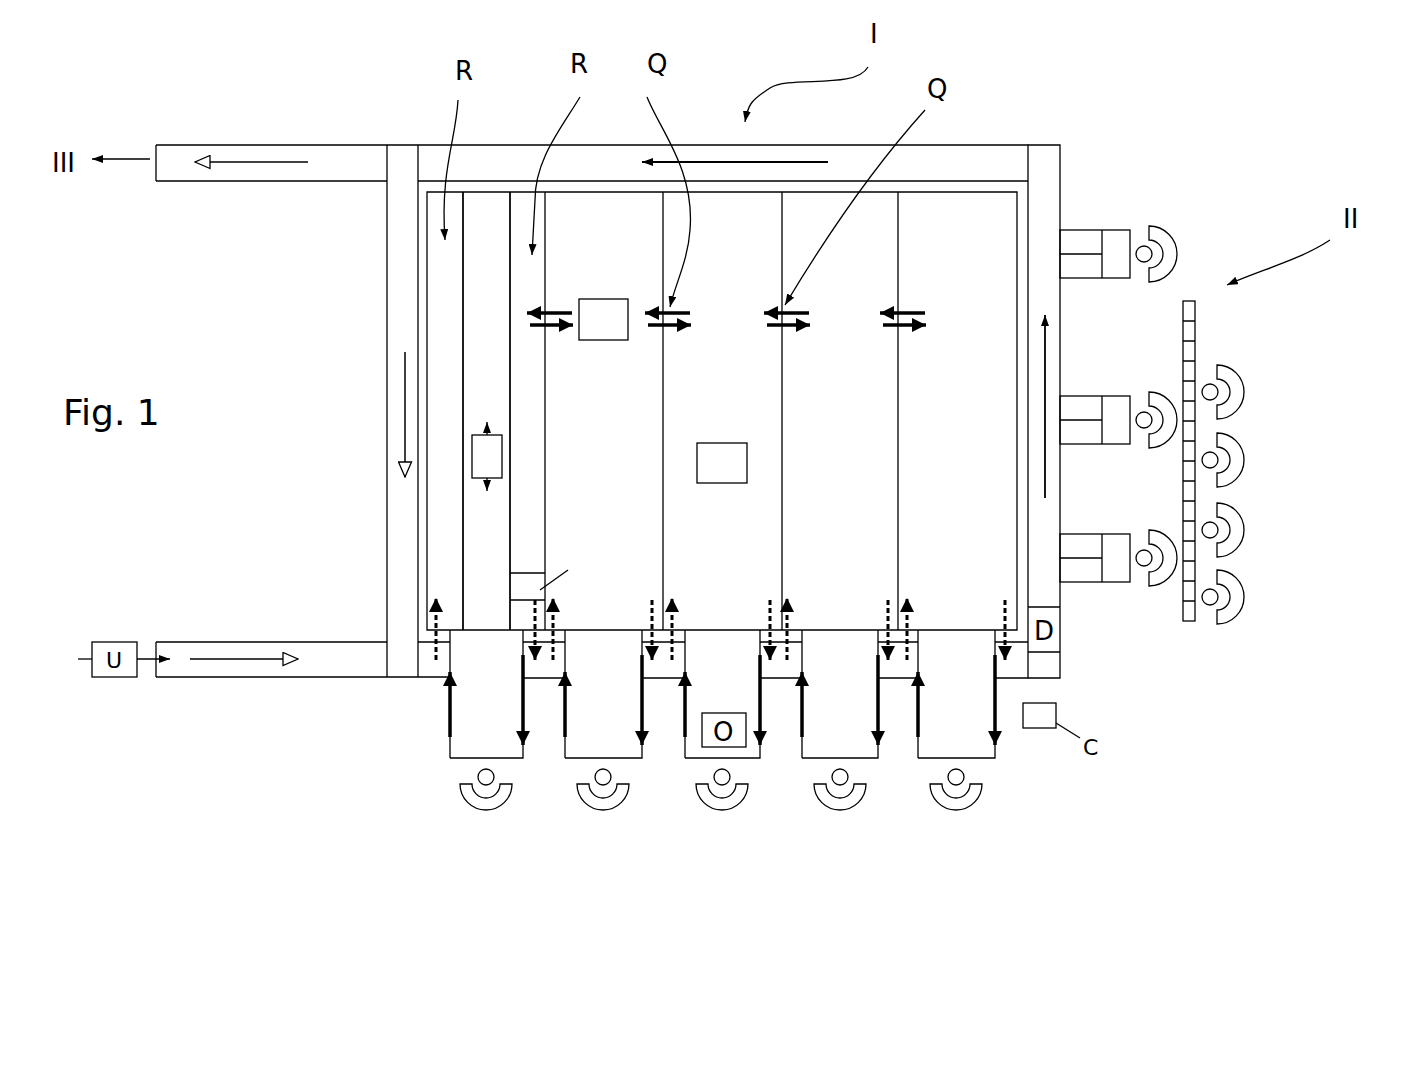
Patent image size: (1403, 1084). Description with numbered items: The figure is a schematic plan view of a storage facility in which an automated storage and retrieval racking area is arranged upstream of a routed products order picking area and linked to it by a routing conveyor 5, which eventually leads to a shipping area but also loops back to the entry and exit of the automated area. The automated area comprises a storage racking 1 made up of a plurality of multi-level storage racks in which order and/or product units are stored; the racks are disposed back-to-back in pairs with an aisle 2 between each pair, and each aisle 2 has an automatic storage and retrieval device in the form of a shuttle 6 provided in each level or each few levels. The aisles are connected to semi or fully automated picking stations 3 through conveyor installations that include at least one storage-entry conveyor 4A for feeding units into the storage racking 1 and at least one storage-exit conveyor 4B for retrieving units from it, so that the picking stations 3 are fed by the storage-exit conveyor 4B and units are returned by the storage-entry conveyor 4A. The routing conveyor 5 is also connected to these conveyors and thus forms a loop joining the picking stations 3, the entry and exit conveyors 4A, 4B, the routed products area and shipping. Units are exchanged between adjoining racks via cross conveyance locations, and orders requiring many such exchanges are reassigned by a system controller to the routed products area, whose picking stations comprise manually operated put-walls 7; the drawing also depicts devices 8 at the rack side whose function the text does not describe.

The storage racking 1 is at (948, 557).
The aisle 2 is at (485, 335).
The picking station 3 is at (852, 815).
The storage-entry conveyor 4A is at (442, 615).
The storage-exit conveyor 4B is at (527, 615).
The routing conveyor 5 is at (978, 158).
The shuttle 6 is at (490, 456).
The put-wall 7 is at (1253, 460).
The actuators 8 is at (1138, 218).